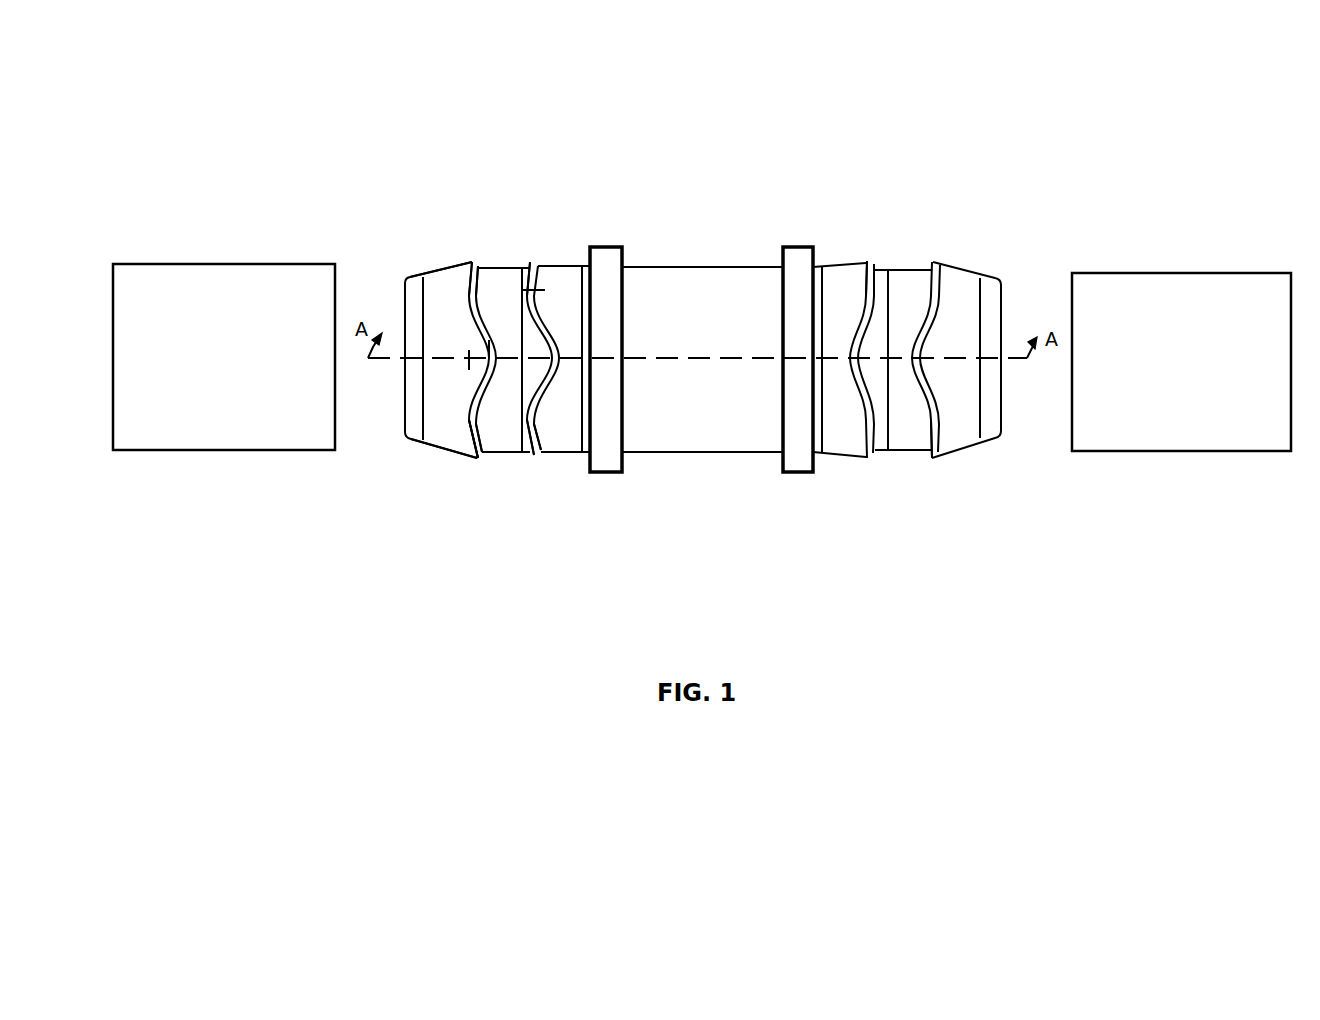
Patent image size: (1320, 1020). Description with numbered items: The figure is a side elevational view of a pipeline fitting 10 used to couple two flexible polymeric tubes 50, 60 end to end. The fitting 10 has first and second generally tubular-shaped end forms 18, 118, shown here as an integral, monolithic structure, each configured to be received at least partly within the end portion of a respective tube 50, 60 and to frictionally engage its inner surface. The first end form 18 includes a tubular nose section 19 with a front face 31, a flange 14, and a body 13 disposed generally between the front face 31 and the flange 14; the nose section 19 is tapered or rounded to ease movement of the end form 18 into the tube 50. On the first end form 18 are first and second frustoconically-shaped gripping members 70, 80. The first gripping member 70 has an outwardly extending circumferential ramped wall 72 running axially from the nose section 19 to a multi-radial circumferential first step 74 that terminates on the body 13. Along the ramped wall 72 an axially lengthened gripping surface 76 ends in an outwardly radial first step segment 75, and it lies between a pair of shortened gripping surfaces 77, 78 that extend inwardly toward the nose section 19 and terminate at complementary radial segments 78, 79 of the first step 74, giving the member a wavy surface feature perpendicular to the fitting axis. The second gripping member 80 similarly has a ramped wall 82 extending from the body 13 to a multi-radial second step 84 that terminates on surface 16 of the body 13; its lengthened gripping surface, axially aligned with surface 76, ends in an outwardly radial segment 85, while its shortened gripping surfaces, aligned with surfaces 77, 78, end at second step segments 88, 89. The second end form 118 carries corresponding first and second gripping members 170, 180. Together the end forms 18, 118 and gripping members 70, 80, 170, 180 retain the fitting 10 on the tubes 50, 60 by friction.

The pipeline fitting 10 is at (855, 78).
The body 13 is at (506, 282).
The flange 14 is at (602, 247).
The surface of body 16 is at (563, 320).
The first end form 18 is at (513, 232).
The tubular nose section 19 is at (416, 432).
The front face 31 is at (400, 310).
The flexible polymeric tube 50 is at (170, 263).
The flexible polymeric tube 60 is at (1218, 272).
The first gripping member 70 is at (438, 255).
The ramped wall 72 is at (438, 432).
The first step 74 is at (491, 463).
The first step segment 75 is at (491, 340).
The gripping surface 76 is at (475, 368).
The shortened gripping surface 77 is at (465, 277).
The shortened gripping surface 78 is at (478, 280).
The radial segment 79 is at (472, 423).
The second gripping member 80 is at (527, 460).
The ramped wall 82 is at (528, 267).
The second step 84 is at (556, 258).
The radial segment 85 is at (558, 363).
The second step segment 88 is at (533, 290).
The second step segment 89 is at (542, 438).
The second end form 118 is at (907, 236).
The first gripping member 170 is at (946, 470).
The second gripping member 180 is at (873, 246).